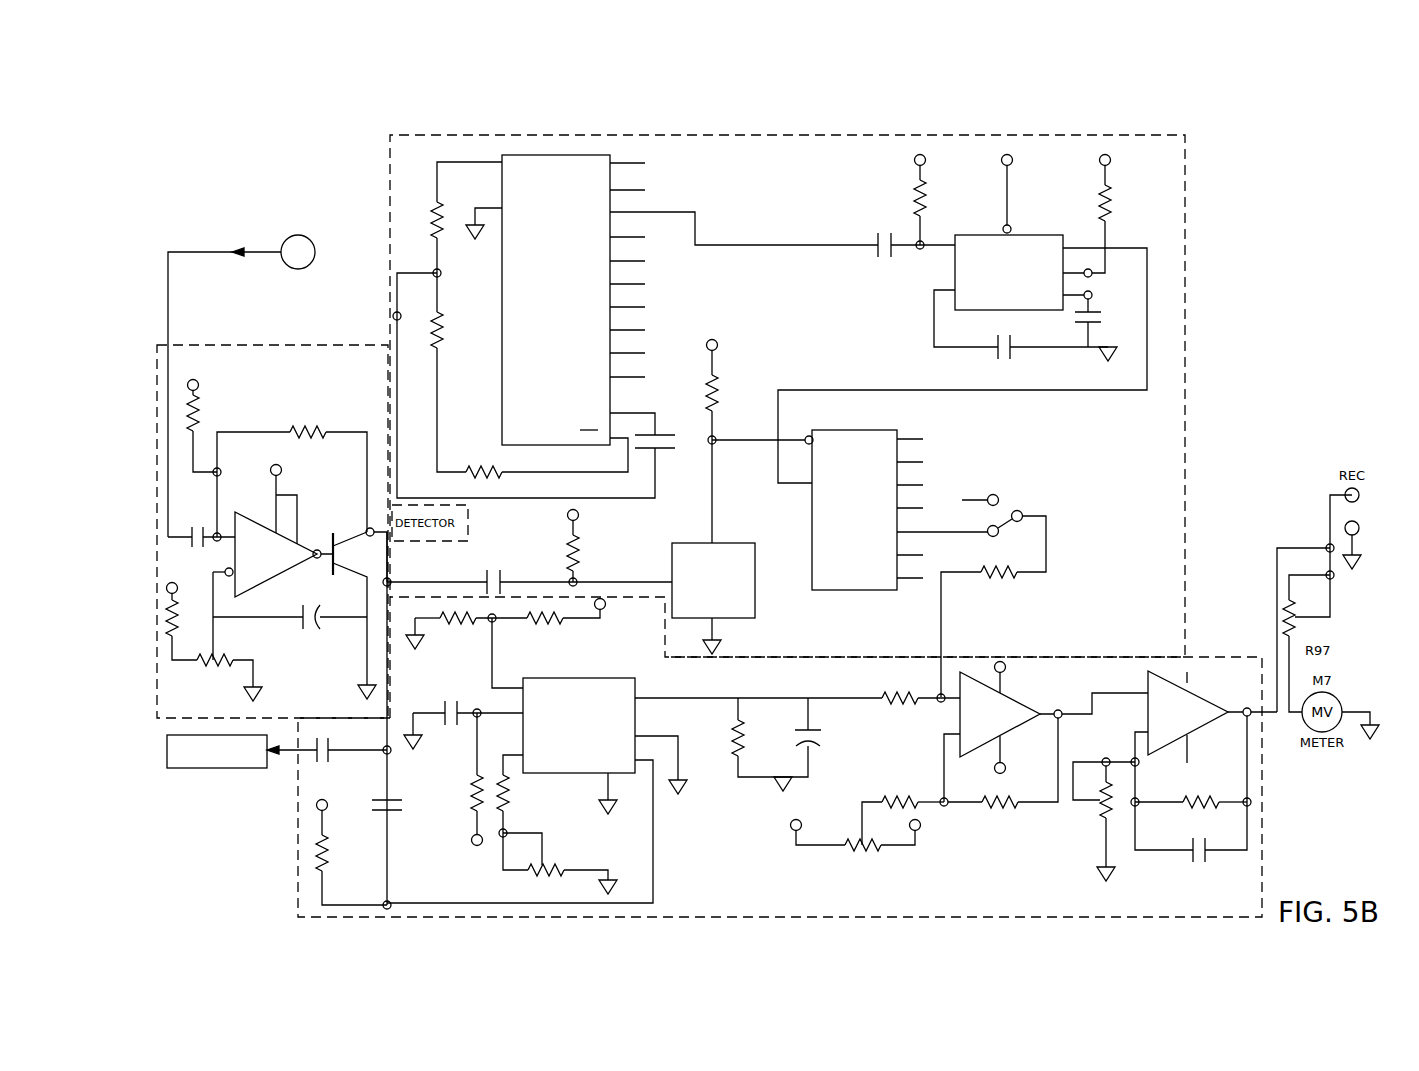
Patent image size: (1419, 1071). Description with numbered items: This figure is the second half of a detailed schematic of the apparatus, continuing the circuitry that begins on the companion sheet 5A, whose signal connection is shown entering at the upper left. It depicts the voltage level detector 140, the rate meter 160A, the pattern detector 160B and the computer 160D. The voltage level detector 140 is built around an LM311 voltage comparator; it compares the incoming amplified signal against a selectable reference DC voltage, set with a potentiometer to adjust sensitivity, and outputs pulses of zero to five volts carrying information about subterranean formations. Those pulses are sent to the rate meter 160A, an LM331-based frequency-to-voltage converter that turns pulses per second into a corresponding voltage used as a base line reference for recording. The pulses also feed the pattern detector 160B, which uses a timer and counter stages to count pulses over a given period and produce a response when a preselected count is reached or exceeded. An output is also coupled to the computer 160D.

The voltage level detector 140 is at (272, 476).
The rate meter 160A is at (298, 880).
The pattern detector 160B is at (1186, 288).
The computer 160D is at (190, 772).
The connection to FIG. 5A is at (244, 345).